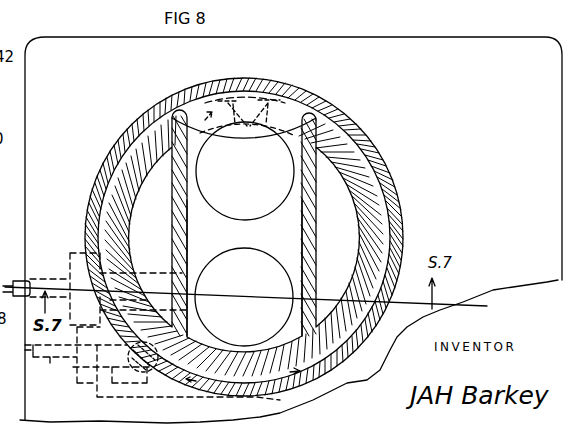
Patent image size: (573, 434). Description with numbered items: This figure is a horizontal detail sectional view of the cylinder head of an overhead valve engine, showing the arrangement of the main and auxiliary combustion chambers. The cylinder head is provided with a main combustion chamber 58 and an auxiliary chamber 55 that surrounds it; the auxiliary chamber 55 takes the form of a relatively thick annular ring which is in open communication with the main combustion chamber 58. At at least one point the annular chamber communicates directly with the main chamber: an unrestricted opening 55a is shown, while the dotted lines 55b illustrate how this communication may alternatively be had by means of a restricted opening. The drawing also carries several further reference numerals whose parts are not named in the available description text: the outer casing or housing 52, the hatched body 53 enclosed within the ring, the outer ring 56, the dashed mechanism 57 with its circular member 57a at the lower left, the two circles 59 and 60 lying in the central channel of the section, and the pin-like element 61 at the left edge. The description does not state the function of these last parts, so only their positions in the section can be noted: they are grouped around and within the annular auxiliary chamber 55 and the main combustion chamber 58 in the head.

The housing casing 52 is at (402, 44).
The inner cylinder body 53 is at (351, 163).
The auxiliary chamber 55 is at (387, 205).
The unrestricted opening 55a is at (307, 106).
The restricted opening 55b is at (225, 99).
The outer ring 56 is at (402, 222).
The latch mechanism 57 is at (152, 326).
The latch pivot 57a is at (143, 372).
The main combustion chamber 58 is at (244, 268).
The upper roller 59 is at (245, 171).
The lower roller 60 is at (244, 297).
The pin 61 is at (50, 276).